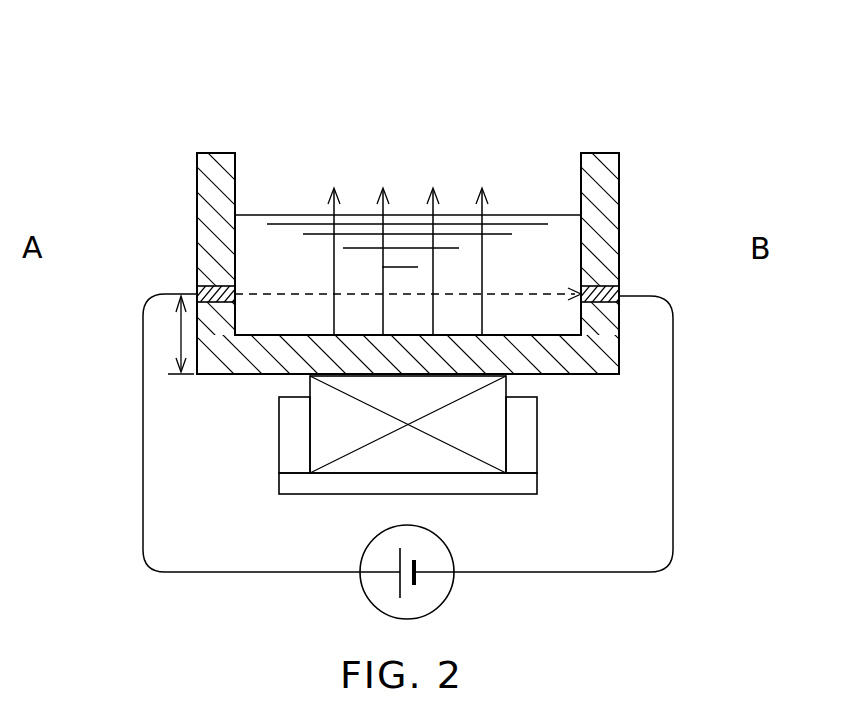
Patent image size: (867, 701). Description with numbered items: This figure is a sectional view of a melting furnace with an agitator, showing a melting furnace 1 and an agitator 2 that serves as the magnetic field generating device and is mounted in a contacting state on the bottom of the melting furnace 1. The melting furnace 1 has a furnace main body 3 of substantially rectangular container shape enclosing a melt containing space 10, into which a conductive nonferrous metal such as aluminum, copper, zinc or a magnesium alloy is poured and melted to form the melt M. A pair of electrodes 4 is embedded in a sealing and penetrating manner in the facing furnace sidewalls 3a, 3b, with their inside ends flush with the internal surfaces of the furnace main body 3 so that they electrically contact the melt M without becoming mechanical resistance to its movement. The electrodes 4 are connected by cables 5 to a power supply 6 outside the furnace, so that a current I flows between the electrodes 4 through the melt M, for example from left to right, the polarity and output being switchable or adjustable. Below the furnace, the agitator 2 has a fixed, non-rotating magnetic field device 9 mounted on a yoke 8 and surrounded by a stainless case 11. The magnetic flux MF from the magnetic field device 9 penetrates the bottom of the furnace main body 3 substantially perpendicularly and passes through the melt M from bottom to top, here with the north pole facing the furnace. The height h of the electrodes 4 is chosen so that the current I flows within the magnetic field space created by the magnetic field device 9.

The melting furnace 1 is at (622, 128).
The agitator 2 is at (503, 467).
The furnace main body 3 is at (603, 186).
The furnace sidewall 3a is at (600, 228).
The furnace sidewall 3b is at (212, 205).
The electrode 4 is at (195, 288).
The cable 5 is at (143, 446).
The power supply 6 is at (364, 560).
The yoke 8 is at (526, 485).
The magnetic field device 9 is at (427, 460).
The melt containing space 10 is at (581, 246).
The stainless case 11 is at (520, 428).
The melt M is at (528, 232).
The magnetic flux MF is at (492, 172).
The current I is at (286, 294).
The height of the electrodes h is at (172, 335).